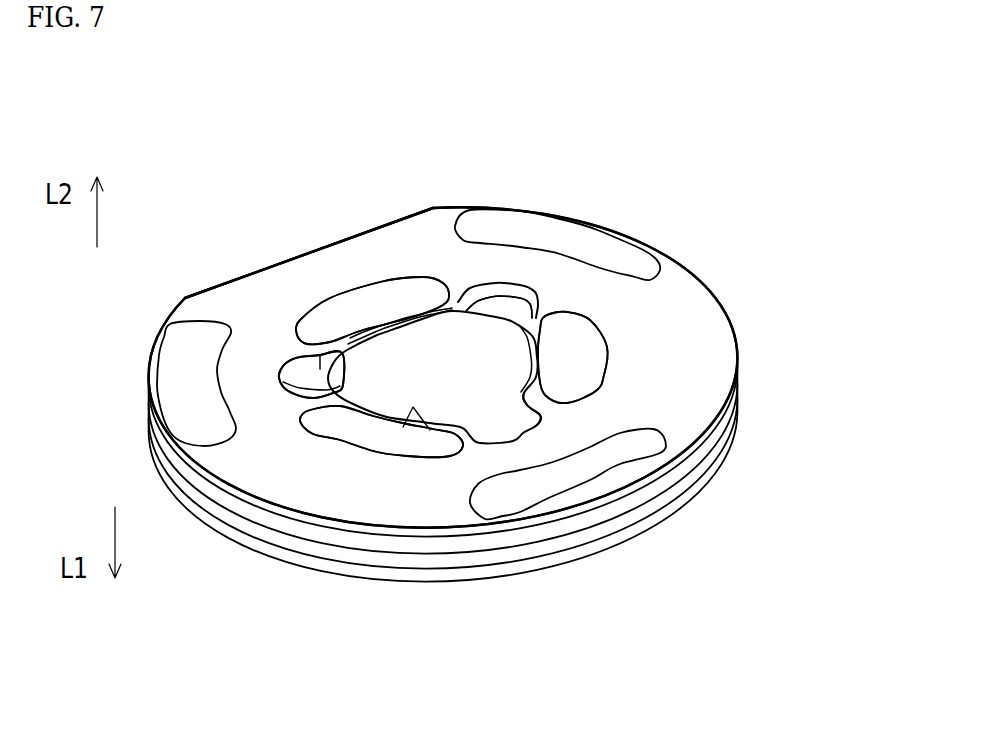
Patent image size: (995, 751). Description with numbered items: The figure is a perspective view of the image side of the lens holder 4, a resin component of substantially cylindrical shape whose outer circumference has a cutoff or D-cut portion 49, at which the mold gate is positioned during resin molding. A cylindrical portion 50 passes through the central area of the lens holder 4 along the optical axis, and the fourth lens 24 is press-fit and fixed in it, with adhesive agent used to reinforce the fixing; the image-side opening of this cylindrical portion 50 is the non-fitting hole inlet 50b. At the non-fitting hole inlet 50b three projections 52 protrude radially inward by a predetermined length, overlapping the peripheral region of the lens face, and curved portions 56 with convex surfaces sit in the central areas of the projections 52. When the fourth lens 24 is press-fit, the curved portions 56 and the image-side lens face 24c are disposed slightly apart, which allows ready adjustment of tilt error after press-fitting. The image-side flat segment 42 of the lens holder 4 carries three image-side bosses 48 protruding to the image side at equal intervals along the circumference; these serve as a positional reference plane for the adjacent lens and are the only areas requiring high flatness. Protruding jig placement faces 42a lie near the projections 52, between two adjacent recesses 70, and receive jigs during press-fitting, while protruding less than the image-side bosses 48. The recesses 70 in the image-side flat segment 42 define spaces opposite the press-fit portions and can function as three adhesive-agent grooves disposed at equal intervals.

The lens holder 4 is at (129, 97).
The fourth lens 24 is at (434, 261).
The image-side lens face 24c is at (460, 347).
The image-side flat segment 42 is at (663, 330).
The jig placement faces 42a is at (344, 330).
The image-side bosses 48 is at (575, 243).
The D-cut portion 49 is at (275, 290).
The cylindrical portion 50 is at (509, 477).
The non-fitting hole inlet 50b is at (523, 380).
The projections 52 is at (522, 357).
The curved portions 56 is at (392, 327).
The recesses 70 is at (510, 303).